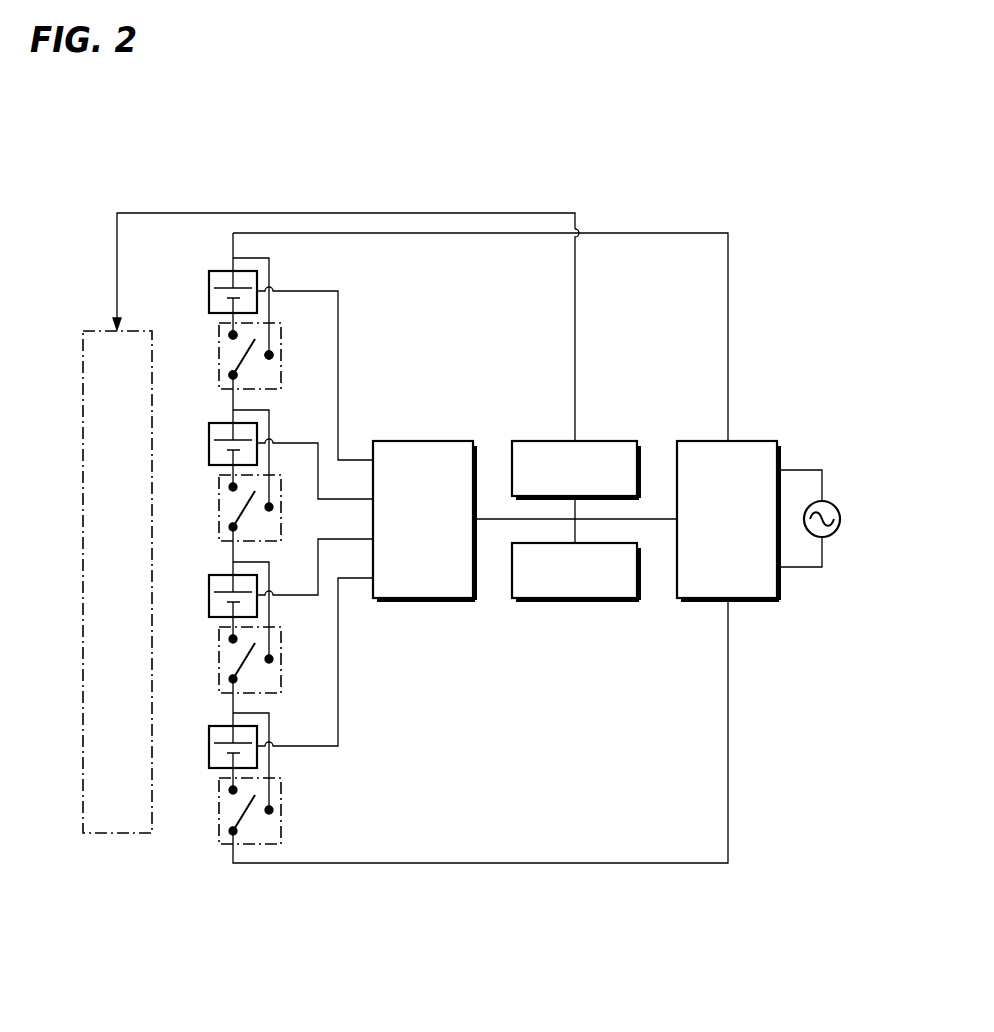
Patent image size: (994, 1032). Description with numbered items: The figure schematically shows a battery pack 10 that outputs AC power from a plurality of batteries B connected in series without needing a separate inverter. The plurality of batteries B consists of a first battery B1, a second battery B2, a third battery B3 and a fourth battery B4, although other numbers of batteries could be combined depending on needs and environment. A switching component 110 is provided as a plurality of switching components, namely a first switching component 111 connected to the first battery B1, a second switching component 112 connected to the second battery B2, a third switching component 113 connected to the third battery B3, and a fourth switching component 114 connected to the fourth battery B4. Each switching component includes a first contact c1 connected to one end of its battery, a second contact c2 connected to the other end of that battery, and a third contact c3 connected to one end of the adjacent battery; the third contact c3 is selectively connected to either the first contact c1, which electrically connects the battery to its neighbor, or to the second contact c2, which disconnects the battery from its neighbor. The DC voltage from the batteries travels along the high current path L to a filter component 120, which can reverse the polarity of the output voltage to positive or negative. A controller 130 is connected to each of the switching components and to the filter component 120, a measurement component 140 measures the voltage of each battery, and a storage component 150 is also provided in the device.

The battery pack 10 is at (206, 182).
The switching component 110 is at (243, 902).
The first switching component 111 is at (219, 354).
The second switching component 112 is at (219, 506).
The third switching component 113 is at (219, 658).
The fourth switching component 114 is at (219, 809).
The filter component 120 is at (756, 441).
The controller 130 is at (615, 441).
The measurement component 140 is at (451, 441).
The storage component 150 is at (615, 601).
The plurality of batteries B is at (133, 902).
The first battery B1 is at (209, 291).
The second battery B2 is at (209, 443).
The third battery B3 is at (209, 595).
The fourth battery B4 is at (209, 746).
The first contact c1 is at (222, 336).
The second contact c2 is at (277, 355).
The third contact c3 is at (222, 376).
The high current path L is at (686, 233).